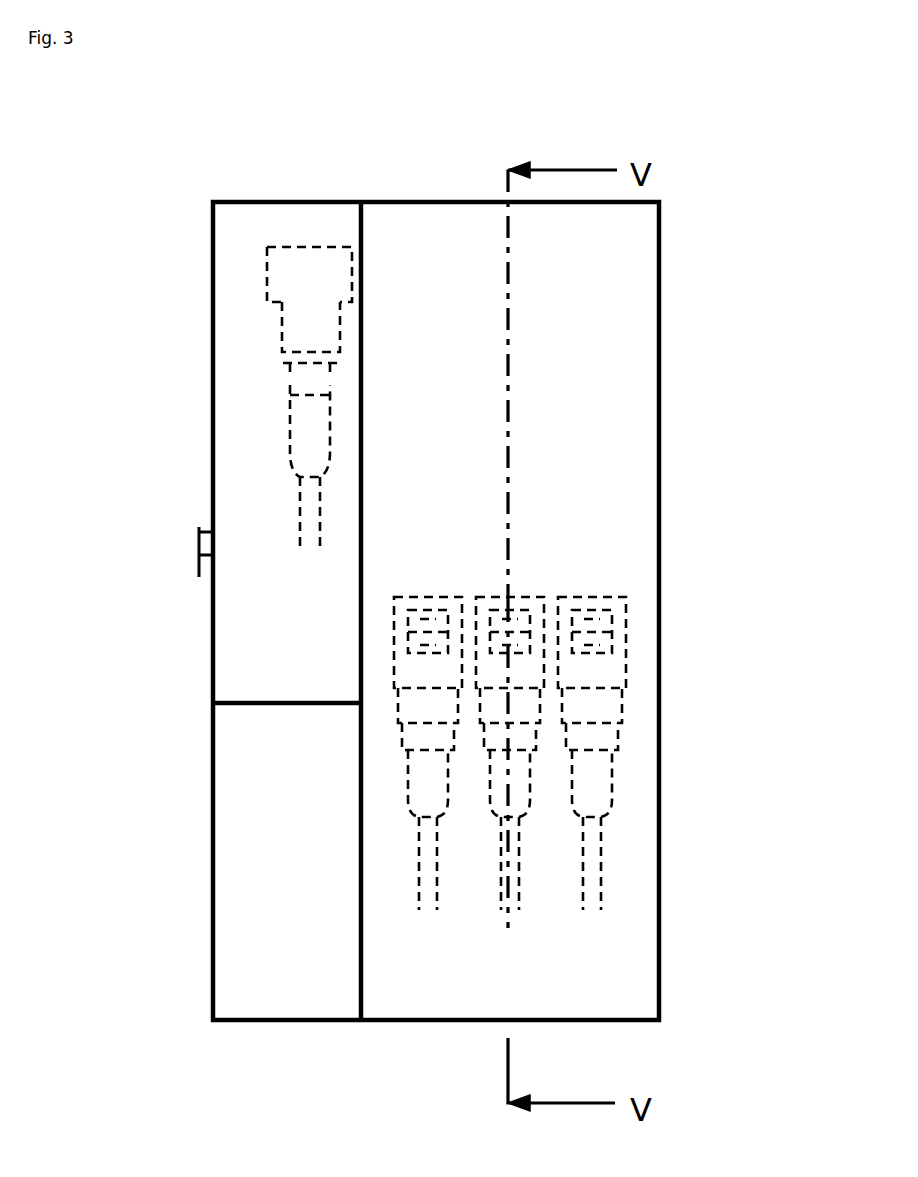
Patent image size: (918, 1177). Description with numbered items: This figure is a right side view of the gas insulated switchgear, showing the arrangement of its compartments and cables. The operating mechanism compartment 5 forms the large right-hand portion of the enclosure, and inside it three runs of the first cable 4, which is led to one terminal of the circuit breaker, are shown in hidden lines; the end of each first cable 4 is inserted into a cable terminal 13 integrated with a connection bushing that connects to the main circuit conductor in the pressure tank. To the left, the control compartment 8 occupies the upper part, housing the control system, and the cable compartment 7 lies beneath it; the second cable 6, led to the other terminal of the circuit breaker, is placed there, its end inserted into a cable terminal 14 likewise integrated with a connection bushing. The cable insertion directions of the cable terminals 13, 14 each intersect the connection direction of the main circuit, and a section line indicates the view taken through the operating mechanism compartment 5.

The first cable 4 is at (589, 738).
The operating mechanism compartment 5 is at (643, 333).
The second cable 6 is at (212, 471).
The cable compartment 7 is at (214, 763).
The control compartment 8 is at (213, 332).
The cable terminal 13 is at (622, 616).
The cable terminal 14 is at (262, 258).